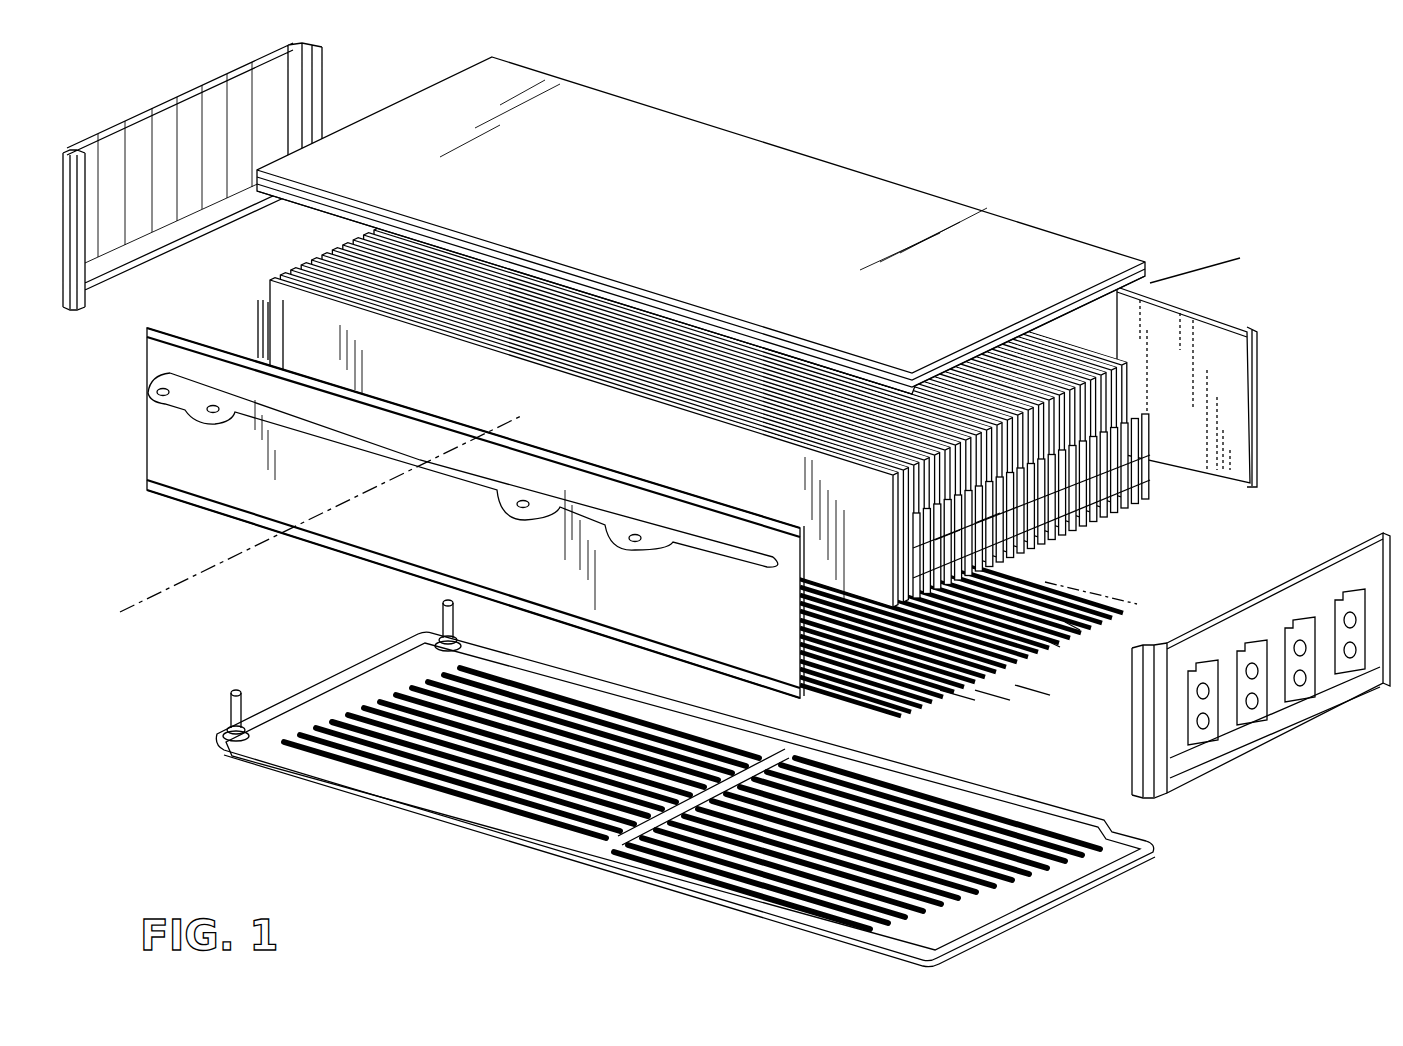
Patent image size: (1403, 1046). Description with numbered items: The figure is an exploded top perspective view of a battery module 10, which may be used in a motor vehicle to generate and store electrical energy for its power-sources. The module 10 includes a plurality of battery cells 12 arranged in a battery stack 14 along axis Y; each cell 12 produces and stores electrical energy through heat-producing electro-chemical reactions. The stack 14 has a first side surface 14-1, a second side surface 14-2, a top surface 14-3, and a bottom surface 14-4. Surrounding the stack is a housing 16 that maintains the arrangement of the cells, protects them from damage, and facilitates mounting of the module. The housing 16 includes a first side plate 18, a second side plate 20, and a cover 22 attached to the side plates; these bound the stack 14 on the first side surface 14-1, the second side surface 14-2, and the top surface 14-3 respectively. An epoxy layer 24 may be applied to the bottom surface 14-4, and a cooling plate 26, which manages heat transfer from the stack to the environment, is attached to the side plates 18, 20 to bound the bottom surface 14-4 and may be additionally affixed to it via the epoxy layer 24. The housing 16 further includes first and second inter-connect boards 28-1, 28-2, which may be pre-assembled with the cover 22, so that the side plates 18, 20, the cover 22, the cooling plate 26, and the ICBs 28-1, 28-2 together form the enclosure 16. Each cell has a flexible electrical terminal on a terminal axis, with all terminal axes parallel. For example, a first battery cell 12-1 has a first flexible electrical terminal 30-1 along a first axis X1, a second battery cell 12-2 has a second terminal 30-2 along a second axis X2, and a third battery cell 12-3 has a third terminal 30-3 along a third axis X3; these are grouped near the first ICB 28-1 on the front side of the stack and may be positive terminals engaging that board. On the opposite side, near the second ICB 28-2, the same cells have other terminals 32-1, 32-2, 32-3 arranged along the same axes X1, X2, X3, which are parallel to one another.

The battery module 10 is at (726, 503).
The battery cell 12 is at (1225, 384).
The first battery cell 12-1 is at (907, 490).
The second battery cell 12-2 is at (940, 497).
The third battery cell 12-3 is at (980, 500).
The battery stack 14 is at (718, 387).
The first side surface 14-1 is at (1137, 523).
The second side surface 14-2 is at (300, 340).
The top surface 14-3 is at (340, 267).
The bottom surface 14-4 is at (1090, 567).
The housing 16 is at (1150, 283).
The first side plate 18 is at (1256, 382).
The second side plate 20 is at (147, 456).
The cover 22 is at (428, 108).
The epoxy layer 24 is at (1007, 670).
The cooling plate 26 is at (448, 813).
The first inter-connect board 28-1 is at (1280, 700).
The second inter-connect board 28-2 is at (187, 92).
The first flexible electrical terminal 30-1 is at (952, 698).
The second flexible electrical terminal 30-2 is at (985, 700).
The third flexible electrical terminal 30-3 is at (1023, 697).
The terminal 32-1 is at (257, 352).
The terminal 32-2 is at (175, 329).
The electrical terminal 32-3 is at (178, 331).
The first axis X1 is at (1053, 647).
The second axis X2 is at (1076, 628).
The third axis X3 is at (1137, 604).
The axis Y is at (200, 604).